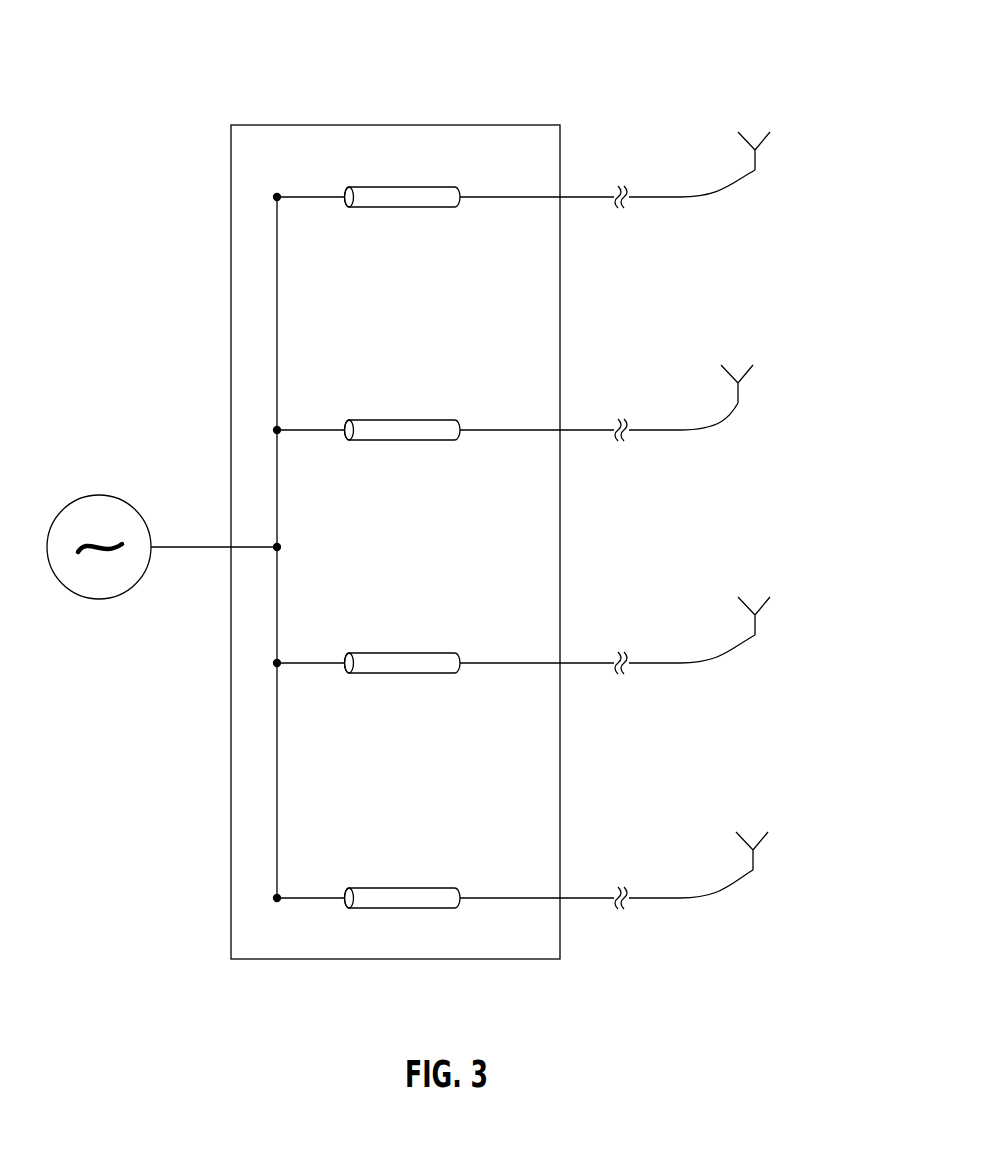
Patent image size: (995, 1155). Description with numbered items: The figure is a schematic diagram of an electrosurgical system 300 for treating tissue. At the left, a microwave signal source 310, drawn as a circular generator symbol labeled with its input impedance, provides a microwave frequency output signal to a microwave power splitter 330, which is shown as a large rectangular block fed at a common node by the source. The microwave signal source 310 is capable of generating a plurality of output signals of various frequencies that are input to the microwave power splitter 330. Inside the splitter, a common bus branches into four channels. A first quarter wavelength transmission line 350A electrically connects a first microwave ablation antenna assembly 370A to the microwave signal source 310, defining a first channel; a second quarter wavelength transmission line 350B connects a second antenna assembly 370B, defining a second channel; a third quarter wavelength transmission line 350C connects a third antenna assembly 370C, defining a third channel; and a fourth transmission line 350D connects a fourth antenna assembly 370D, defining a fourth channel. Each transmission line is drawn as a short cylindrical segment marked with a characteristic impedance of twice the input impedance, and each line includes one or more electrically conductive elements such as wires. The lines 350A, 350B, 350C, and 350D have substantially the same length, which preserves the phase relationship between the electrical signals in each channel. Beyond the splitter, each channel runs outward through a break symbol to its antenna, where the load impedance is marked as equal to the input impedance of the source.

The electrosurgical system 300 is at (232, 38).
The microwave signal source 310 is at (97, 495).
The microwave power splitter 330 is at (231, 232).
The first quarter wavelength transmission line 350A is at (408, 187).
The second quarter wavelength transmission line 350B is at (408, 420).
The third quarter wavelength transmission line 350C is at (408, 653).
The fourth transmission line 350D is at (408, 888).
The first microwave ablation antenna assembly 370A is at (762, 148).
The second microwave ablation antenna assembly 370B is at (745, 382).
The third microwave ablation antenna assembly 370C is at (762, 615).
The fourth microwave ablation antenna assembly 370D is at (760, 850).